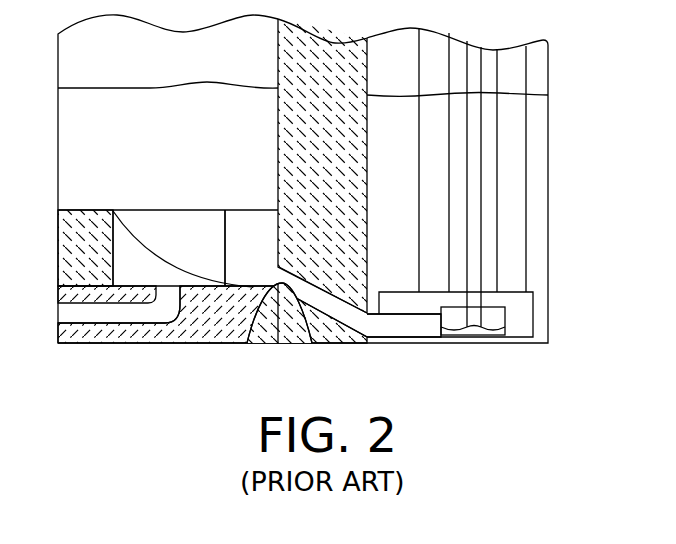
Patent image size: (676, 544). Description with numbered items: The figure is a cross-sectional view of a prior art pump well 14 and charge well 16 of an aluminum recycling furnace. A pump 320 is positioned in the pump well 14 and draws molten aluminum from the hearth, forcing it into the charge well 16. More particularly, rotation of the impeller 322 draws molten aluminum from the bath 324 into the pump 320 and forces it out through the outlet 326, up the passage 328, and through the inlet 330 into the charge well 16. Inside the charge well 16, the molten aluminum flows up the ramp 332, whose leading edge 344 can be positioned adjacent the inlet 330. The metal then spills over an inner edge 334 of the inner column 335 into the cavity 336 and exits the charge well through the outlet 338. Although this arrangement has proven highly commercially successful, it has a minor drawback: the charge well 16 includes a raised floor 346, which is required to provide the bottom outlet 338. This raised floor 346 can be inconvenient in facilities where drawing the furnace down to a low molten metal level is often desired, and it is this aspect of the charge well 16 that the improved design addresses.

The pump well 14 is at (537, 152).
The charge well 16 is at (205, 123).
The pump 320 is at (522, 318).
The impeller 322 is at (488, 338).
The bath 324 is at (414, 145).
The outlet 326 is at (398, 338).
The passage 328 is at (330, 338).
The inlet 330 is at (248, 343).
The ramp 332 is at (150, 240).
The inner edge 334 is at (212, 205).
The inner column 335 is at (173, 223).
The cavity 336 is at (218, 248).
The outlet 338 is at (90, 310).
The leading edge 344 is at (313, 338).
The raised floor 346 is at (163, 343).